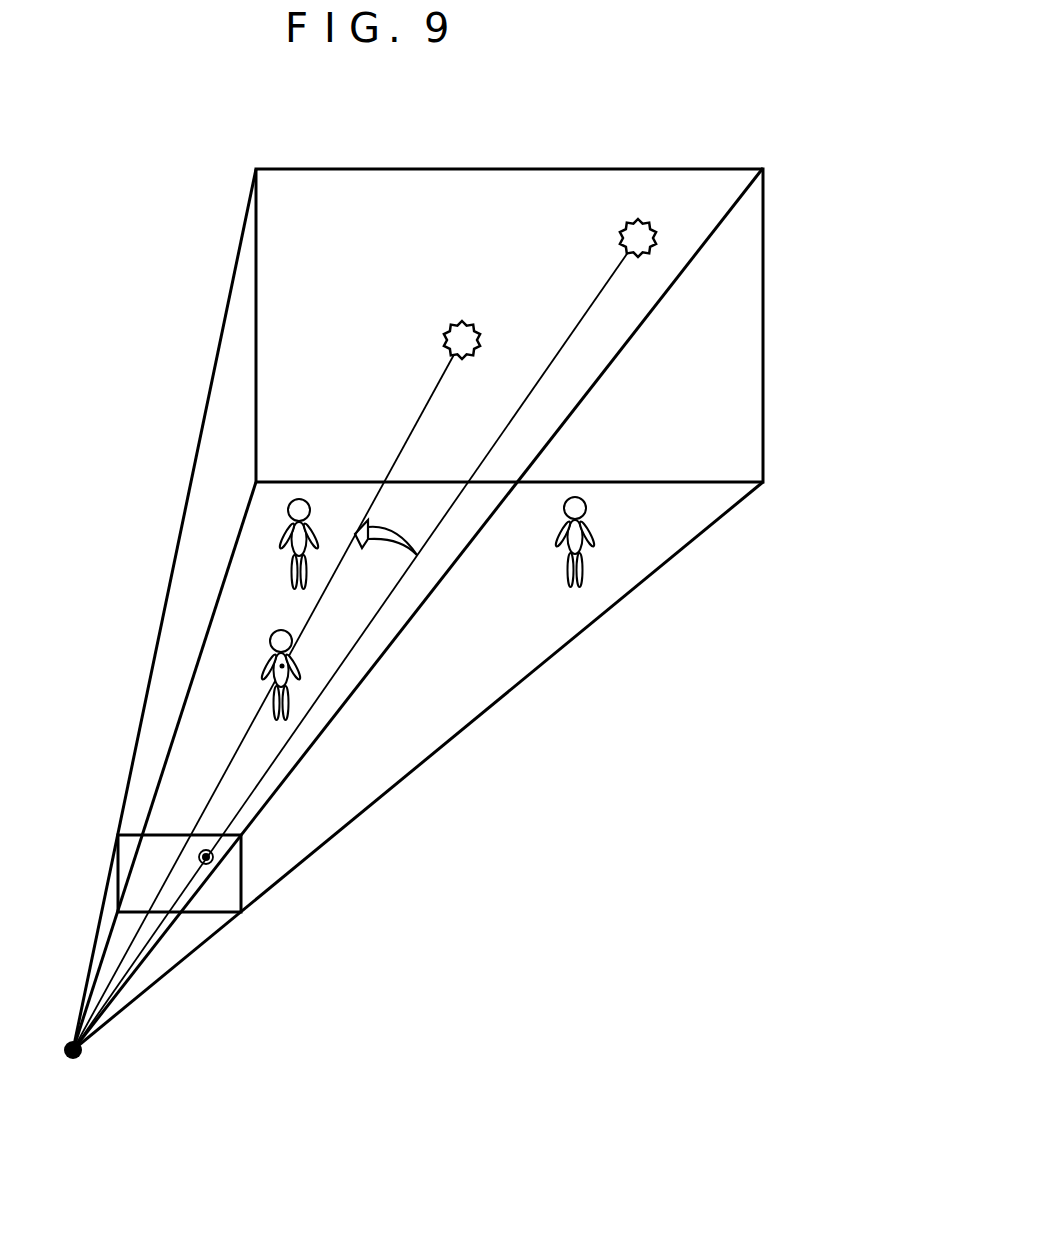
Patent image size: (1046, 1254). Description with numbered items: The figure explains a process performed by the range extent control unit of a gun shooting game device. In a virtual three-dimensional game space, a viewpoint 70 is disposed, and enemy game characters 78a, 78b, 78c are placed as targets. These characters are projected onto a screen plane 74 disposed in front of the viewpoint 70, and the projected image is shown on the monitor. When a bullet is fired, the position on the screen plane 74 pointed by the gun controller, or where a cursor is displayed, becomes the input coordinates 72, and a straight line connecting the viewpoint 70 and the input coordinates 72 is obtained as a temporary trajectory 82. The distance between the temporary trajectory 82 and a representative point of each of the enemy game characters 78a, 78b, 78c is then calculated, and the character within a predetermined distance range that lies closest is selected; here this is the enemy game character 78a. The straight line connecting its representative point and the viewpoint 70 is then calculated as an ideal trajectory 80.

The viewpoint 70 is at (83, 1050).
The input coordinates 72 is at (213, 864).
The screen plane 74 is at (242, 850).
The enemy game character 78a is at (277, 631).
The enemy game character 78b is at (305, 499).
The enemy game character 78c is at (586, 508).
The ideal trajectory 80 is at (437, 382).
The temporary trajectory 82 is at (590, 305).